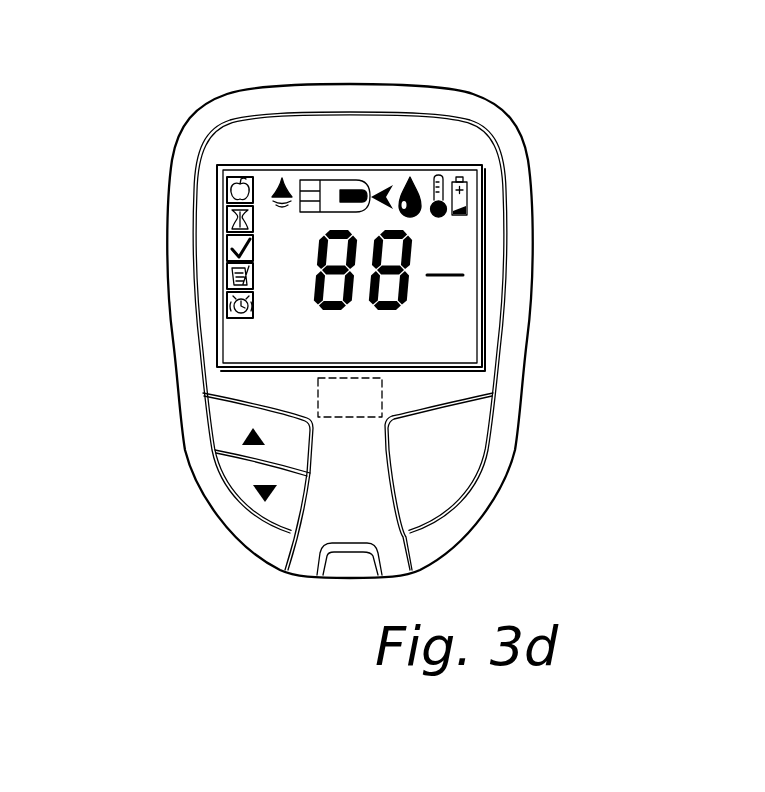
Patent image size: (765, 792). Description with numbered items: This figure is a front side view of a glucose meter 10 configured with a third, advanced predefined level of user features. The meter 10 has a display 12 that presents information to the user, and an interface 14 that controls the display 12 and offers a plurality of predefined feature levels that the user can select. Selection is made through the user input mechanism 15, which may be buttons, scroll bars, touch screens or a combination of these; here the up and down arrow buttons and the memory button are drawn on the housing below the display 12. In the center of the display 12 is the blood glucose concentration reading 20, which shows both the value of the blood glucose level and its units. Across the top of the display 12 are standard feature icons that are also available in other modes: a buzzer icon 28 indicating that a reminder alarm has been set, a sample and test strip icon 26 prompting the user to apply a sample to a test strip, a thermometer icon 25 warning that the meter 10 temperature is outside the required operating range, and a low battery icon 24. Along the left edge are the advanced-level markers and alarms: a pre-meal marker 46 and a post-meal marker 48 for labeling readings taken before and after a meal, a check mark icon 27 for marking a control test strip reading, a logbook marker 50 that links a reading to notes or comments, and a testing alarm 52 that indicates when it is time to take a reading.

The meter 10 is at (520, 132).
The display 12 is at (466, 343).
The interface 14 is at (375, 388).
The user input mechanism 15 is at (247, 488).
The blood glucose concentration reading 20 is at (413, 241).
The low battery icon 24 is at (462, 176).
The thermometer icon 25 is at (440, 175).
The sample and test strip icon 26 is at (351, 152).
The check mark icon 27 is at (235, 241).
The buzzer icon 28 is at (280, 177).
The pre-meal marker 46 is at (235, 185).
The post-meal marker 48 is at (235, 213).
The logbook marker 50 is at (235, 275).
The testing alarm 52 is at (235, 311).